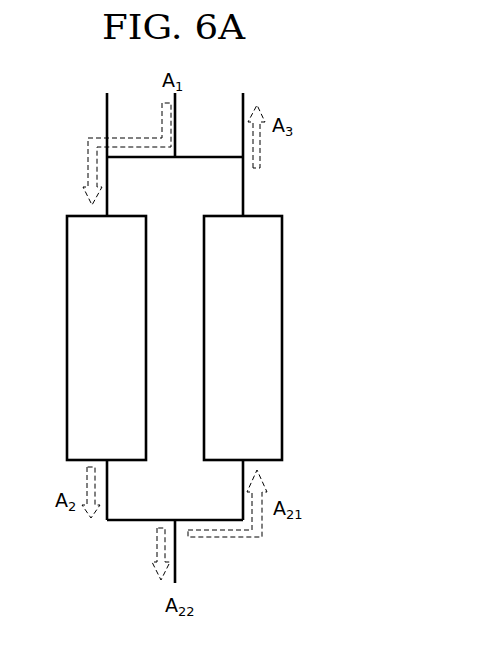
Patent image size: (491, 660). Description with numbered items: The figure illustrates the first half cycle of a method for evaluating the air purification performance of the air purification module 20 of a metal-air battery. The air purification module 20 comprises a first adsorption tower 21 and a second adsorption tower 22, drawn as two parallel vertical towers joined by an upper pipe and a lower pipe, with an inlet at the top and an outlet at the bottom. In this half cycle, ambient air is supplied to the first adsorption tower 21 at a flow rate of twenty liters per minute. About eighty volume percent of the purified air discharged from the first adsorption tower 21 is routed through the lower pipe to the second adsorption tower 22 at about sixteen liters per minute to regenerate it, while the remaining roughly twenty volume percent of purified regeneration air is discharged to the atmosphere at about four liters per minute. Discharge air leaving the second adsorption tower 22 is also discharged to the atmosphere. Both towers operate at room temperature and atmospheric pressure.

The air purification module 20 is at (248, 338).
The first adsorption tower 21 is at (150, 402).
The second adsorption tower 22 is at (384, 377).